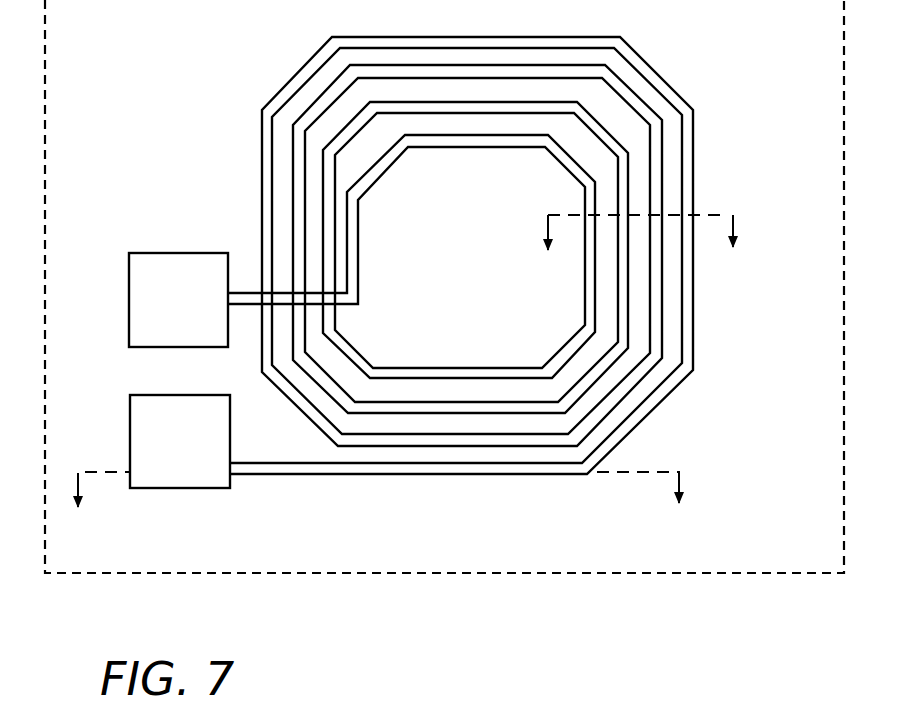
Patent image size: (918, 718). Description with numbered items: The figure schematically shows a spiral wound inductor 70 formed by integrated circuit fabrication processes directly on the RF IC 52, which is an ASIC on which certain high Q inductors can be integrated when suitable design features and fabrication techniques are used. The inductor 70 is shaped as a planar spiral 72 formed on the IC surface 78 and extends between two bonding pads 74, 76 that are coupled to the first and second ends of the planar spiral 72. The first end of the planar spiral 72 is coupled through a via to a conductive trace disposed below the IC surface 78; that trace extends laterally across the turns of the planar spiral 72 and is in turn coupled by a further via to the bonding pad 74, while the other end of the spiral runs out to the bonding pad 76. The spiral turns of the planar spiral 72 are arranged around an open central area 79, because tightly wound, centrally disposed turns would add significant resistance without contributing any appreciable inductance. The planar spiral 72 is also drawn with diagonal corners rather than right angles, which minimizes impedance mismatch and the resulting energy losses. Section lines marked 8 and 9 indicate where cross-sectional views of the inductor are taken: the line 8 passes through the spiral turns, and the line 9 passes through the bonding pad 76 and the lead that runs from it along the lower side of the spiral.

The RF IC 52 is at (565, 578).
The inductor 70 is at (456, 289).
The planar spiral 72 is at (692, 157).
The bonding pad 74 is at (141, 253).
The bonding pad 76 is at (148, 488).
The IC surface 78 is at (338, 513).
The open central area 79 is at (432, 299).
The section line 8- 8 is at (639, 247).
The section line 9- 9 is at (379, 504).